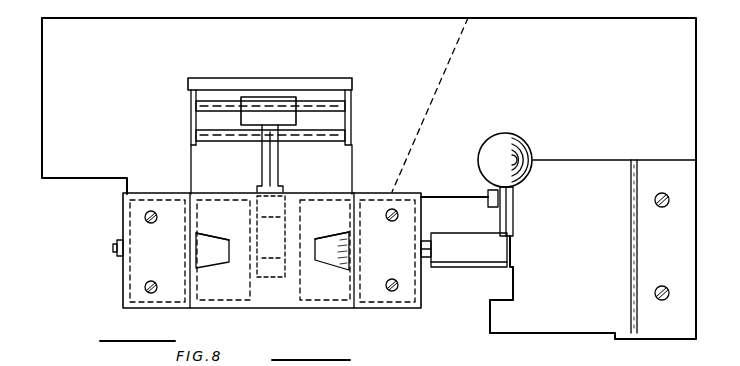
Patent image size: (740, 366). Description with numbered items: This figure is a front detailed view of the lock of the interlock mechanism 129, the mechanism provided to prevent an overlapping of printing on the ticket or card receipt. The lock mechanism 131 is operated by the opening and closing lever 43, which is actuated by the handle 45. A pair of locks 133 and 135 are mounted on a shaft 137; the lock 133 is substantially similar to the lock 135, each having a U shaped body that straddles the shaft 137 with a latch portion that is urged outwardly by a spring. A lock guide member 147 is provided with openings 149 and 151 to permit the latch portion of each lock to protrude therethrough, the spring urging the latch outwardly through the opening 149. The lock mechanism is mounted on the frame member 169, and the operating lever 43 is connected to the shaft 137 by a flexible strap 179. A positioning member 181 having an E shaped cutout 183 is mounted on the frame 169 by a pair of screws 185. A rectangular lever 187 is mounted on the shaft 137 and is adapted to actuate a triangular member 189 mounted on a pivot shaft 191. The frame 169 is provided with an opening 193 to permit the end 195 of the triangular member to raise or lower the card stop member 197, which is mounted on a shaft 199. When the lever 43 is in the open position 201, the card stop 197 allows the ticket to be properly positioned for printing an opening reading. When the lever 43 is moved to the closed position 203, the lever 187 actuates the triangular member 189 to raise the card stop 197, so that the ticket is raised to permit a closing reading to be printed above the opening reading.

The opening and closing lever 43 is at (515, 199).
The handle 45 is at (527, 146).
The interlock mechanism 129 is at (433, 165).
The lock mechanism 131 is at (366, 312).
The lock 133 is at (207, 251).
The lock 135 is at (340, 252).
The shaft 137 is at (112, 247).
The lock guide member 147 is at (347, 192).
The opening 149 is at (326, 242).
The opening 151 is at (214, 239).
The frame member 169 is at (640, 51).
The flexible strap 179 is at (469, 262).
The positioning member 181 is at (594, 323).
The E shaped cutout 183 is at (514, 287).
The screws 185 is at (663, 208).
The rectangular lever 187 is at (297, 199).
The triangular member 189 is at (263, 162).
The pivot shaft 191 is at (342, 132).
The opening 193 is at (190, 155).
The end 195 is at (268, 128).
The card stop member 197 is at (259, 108).
The shaft 199 is at (318, 104).
The open position 201 is at (489, 203).
The closed position 203 is at (498, 305).